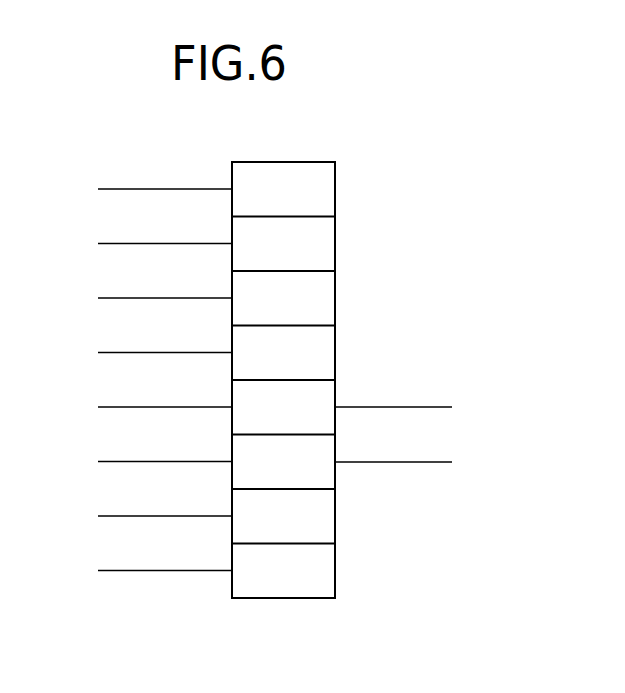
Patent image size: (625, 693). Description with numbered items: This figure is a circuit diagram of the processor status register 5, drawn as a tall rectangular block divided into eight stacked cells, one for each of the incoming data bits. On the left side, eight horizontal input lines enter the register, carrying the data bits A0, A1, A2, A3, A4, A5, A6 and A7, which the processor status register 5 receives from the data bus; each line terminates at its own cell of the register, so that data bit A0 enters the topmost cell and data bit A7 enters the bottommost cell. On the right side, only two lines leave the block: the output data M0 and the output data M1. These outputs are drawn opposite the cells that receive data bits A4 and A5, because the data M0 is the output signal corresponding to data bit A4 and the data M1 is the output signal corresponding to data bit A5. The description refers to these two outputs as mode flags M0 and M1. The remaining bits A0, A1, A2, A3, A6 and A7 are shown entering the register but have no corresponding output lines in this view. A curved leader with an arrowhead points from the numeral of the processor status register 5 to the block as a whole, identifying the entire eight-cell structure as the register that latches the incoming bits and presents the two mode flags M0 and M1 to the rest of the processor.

The processor status register 5 is at (401, 247).
The data bit A0 is at (146, 191).
The data bit A1 is at (146, 246).
The data bit A2 is at (146, 300).
The data bit A3 is at (146, 355).
The data bit A4 is at (146, 409).
The data bit A5 is at (146, 464).
The data bit A6 is at (146, 518).
The data bit A7 is at (146, 573).
The mode flag M0 is at (410, 410).
The mode flag M1 is at (410, 465).